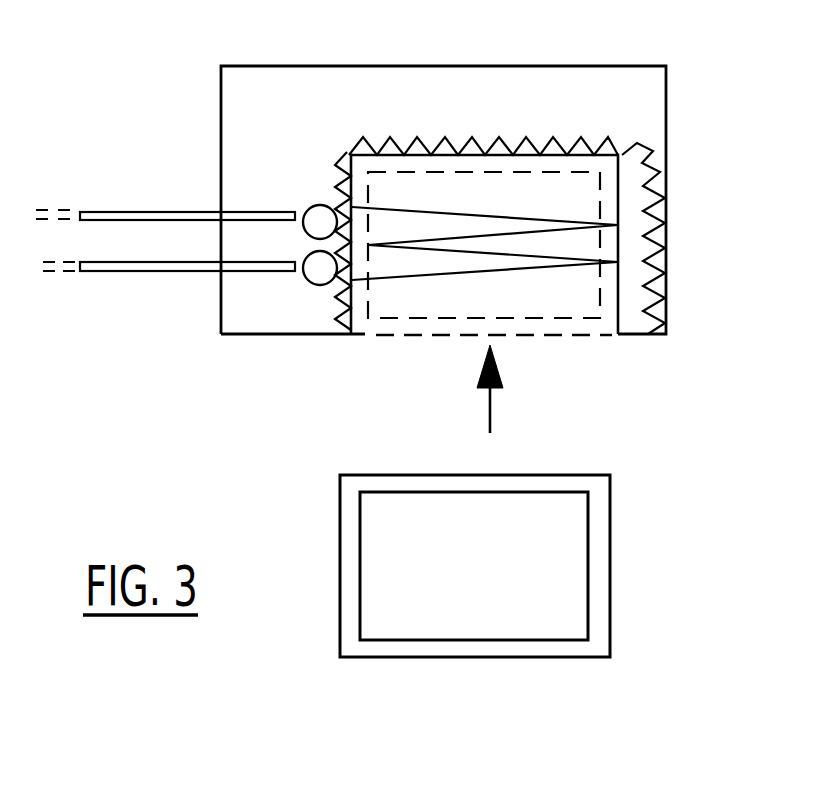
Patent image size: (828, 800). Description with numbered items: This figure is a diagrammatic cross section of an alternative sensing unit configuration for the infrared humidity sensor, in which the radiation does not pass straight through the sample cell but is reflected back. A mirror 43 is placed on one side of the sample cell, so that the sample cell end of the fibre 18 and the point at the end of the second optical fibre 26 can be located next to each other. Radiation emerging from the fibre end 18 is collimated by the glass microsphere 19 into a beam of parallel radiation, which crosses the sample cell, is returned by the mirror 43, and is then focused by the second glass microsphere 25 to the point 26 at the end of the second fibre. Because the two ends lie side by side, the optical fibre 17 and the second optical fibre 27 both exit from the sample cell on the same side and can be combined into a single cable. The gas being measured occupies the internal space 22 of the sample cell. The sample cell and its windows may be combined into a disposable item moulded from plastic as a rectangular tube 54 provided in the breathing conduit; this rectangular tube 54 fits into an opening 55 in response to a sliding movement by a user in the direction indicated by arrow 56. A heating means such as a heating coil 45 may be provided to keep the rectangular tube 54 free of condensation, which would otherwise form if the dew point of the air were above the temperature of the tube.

The optical fibre 17 is at (130, 212).
The second optical fibre 27 is at (140, 272).
The sample cell end of the fibre 18 is at (302, 213).
The point at the end of the second optical fibre 26 is at (303, 286).
The glass microsphere 19 is at (314, 208).
The second glass microsphere 25 is at (318, 290).
The heating coil 45 is at (556, 137).
The mirror 43 is at (613, 302).
The opening 55 is at (400, 297).
The arrow 56 is at (490, 397).
The internal space of the sample cell 22 is at (577, 575).
The rectangular tube 54 is at (493, 657).